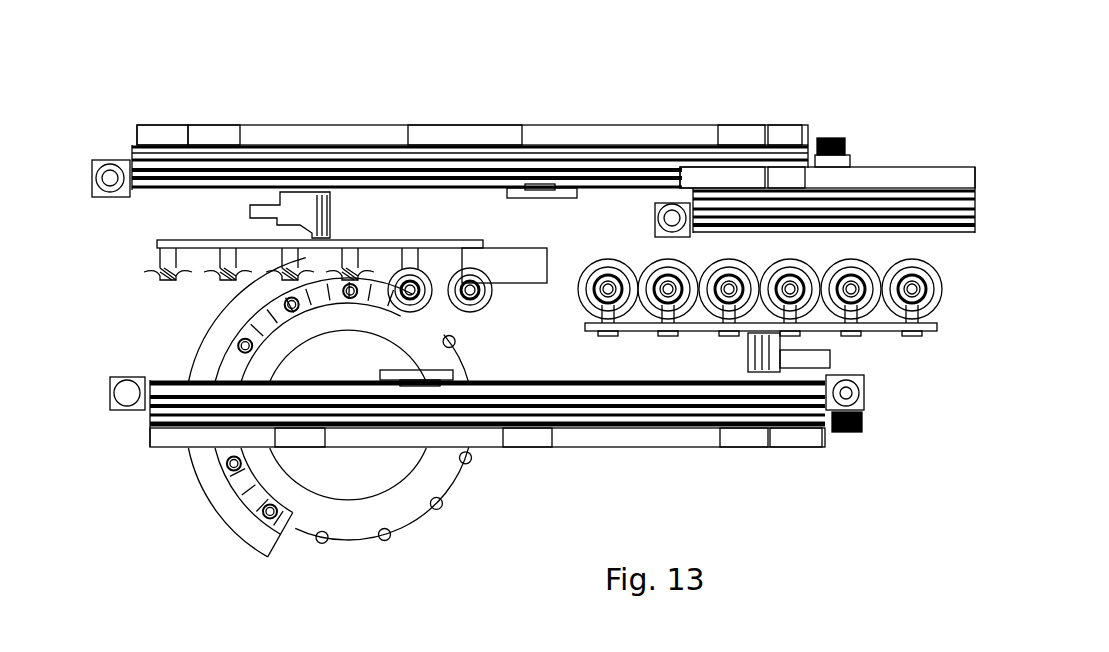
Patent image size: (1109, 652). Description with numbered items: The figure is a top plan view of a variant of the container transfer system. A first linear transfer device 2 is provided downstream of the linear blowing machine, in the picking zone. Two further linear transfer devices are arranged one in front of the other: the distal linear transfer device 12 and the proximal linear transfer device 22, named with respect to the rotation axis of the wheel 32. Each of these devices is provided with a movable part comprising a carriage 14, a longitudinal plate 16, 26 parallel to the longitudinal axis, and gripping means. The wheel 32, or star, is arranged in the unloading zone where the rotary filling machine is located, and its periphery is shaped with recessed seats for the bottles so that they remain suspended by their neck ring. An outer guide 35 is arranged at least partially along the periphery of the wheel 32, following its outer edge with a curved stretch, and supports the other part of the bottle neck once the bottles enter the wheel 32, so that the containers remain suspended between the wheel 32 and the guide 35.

The linear transfer device 2 is at (937, 150).
The distal linear transfer device 12 is at (305, 108).
The carriage 14 is at (260, 215).
The longitudinal plate 16 is at (203, 245).
The proximal linear transfer device 22 is at (792, 455).
The longitudinal plate 26 is at (883, 327).
The wheel 32 is at (397, 510).
The outer guide 35 is at (207, 473).